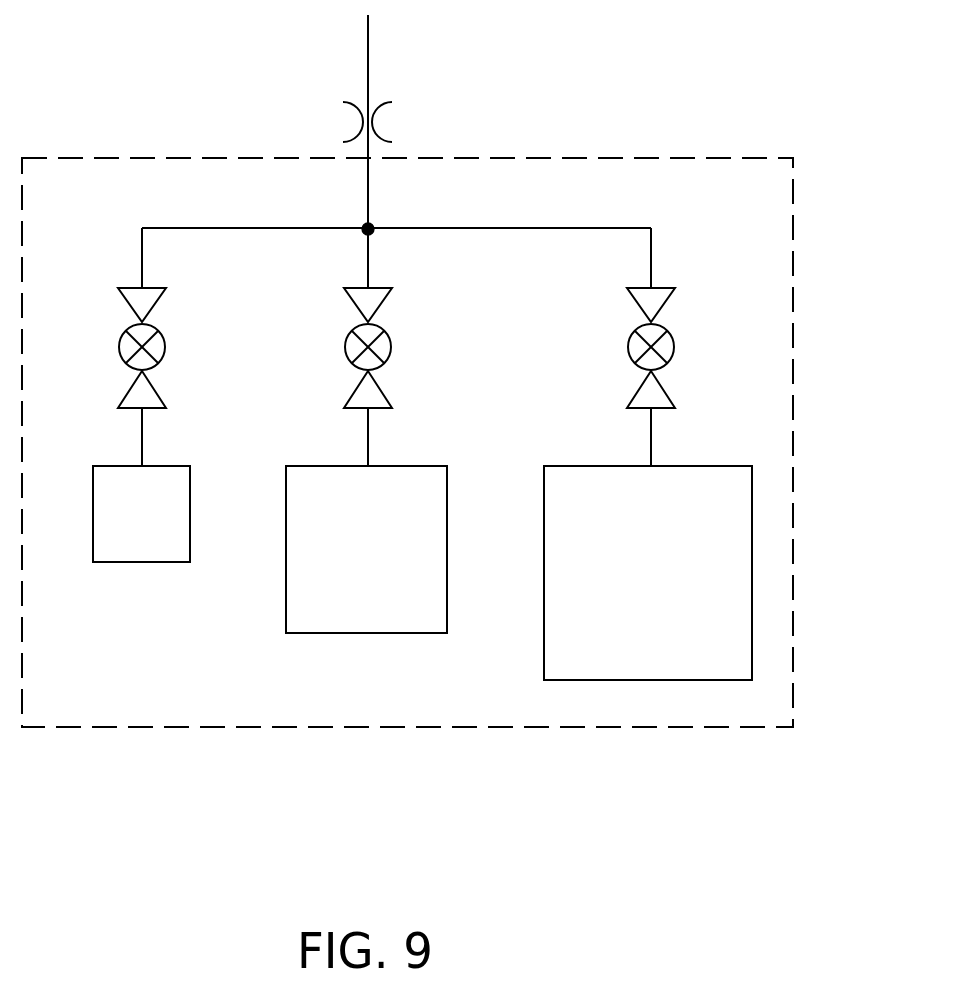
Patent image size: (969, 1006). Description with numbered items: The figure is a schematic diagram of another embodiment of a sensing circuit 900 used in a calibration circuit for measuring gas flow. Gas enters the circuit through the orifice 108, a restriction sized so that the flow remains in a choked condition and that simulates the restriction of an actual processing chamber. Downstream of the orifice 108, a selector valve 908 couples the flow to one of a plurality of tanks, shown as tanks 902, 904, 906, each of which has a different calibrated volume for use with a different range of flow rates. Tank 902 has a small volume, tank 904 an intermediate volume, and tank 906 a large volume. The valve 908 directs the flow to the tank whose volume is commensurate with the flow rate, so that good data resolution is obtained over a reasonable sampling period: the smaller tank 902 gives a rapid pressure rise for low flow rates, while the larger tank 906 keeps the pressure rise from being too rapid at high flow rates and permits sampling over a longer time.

The orifice 108 is at (407, 112).
The sensing circuit 900 is at (750, 158).
The selector valve 908 is at (165, 347).
The tank 902 is at (170, 526).
The tank 904 is at (392, 527).
The tank 906 is at (674, 527).